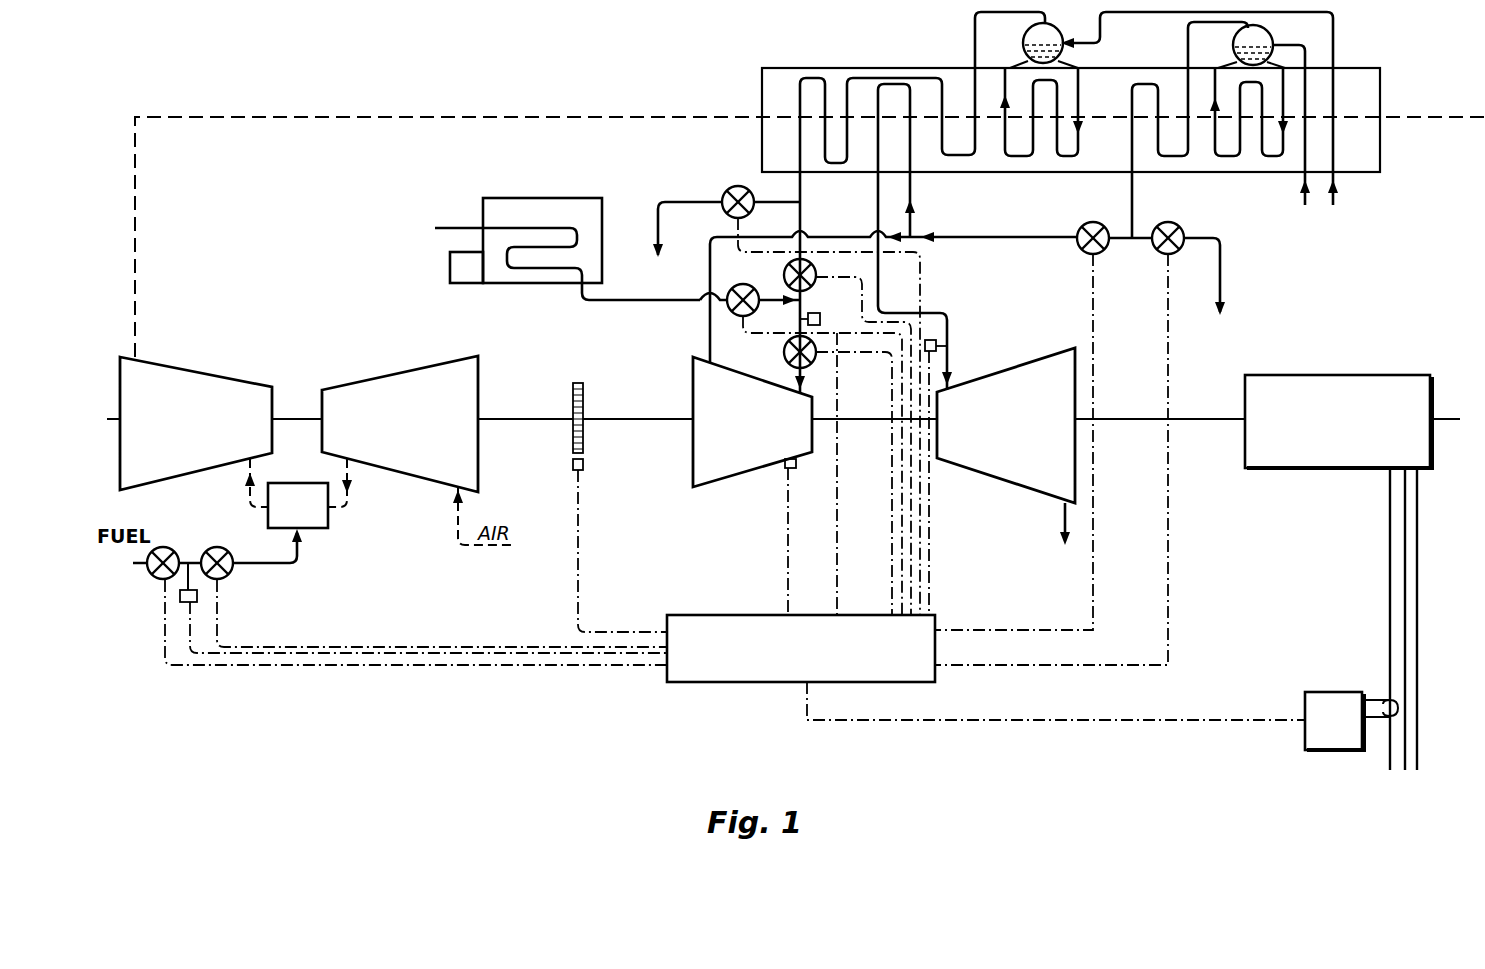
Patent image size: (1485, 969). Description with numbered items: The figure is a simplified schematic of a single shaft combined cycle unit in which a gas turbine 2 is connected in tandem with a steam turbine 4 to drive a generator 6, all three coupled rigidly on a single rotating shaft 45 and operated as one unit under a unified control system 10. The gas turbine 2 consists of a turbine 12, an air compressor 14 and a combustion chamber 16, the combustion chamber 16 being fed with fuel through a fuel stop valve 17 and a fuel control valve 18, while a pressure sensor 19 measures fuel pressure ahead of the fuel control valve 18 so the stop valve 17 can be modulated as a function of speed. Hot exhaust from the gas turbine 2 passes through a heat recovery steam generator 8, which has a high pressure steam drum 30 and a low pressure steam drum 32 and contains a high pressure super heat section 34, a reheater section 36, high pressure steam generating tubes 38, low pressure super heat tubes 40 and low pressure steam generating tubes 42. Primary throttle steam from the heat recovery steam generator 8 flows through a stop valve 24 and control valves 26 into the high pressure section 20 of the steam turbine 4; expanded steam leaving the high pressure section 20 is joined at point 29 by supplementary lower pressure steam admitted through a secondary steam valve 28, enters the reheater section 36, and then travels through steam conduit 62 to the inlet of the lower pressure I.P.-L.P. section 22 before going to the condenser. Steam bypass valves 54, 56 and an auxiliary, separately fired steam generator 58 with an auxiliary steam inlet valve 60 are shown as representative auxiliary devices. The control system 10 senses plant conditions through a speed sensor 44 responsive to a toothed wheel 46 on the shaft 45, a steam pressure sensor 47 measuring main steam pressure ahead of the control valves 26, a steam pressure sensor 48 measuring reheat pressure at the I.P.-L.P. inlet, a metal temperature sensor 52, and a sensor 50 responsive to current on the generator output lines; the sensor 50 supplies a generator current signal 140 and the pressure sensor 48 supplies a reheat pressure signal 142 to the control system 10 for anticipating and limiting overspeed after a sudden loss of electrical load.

The gas turbine 2 is at (108, 345).
The steam turbine 4 is at (1078, 548).
The generator 6 is at (1337, 472).
The heat recovery steam generator 8 is at (762, 70).
The unified control system 10 is at (693, 684).
The turbine 12 is at (258, 386).
The air compressor 14 is at (388, 378).
The combustion chamber 16 is at (325, 530).
The fuel stop valve 17 is at (168, 548).
The fuel control valve 18 is at (230, 543).
The pressure sensor 19 is at (197, 593).
The high pressure section 20 is at (742, 477).
The lower pressure section 22 is at (997, 482).
The stop valve 24 is at (847, 433).
The control valves 26 is at (785, 350).
The secondary steam valve 28 is at (1073, 245).
The junction point 29 is at (912, 234).
The high pressure steam drum 30 is at (1055, 29).
The low pressure steam drum 32 is at (1271, 29).
The high pressure super heat section 34 is at (838, 164).
The reheater section 36 is at (897, 78).
The high pressure steam generating tubes 38 is at (1020, 158).
The low pressure super heat tubes 40 is at (1140, 82).
The low pressure steam generating tubes 42 is at (1277, 157).
The speed sensor 44 is at (572, 470).
The single rotating shaft 45 is at (620, 414).
The toothed wheel 46 is at (573, 400).
The steam pressure sensor 47 is at (818, 322).
The steam pressure sensor 48 is at (938, 342).
The sensor 50 is at (1315, 752).
The temperature sensor 52 is at (796, 462).
The steam bypass valve 54 is at (724, 190).
The steam bypass valve 56 is at (1160, 252).
The auxiliary steam generator 58 is at (543, 198).
The auxiliary steam inlet valve 60 is at (801, 449).
The steam conduit 62 is at (878, 277).
The generator current signal 140 is at (1085, 722).
The steam turbine reheat pressure signal 142 is at (930, 576).